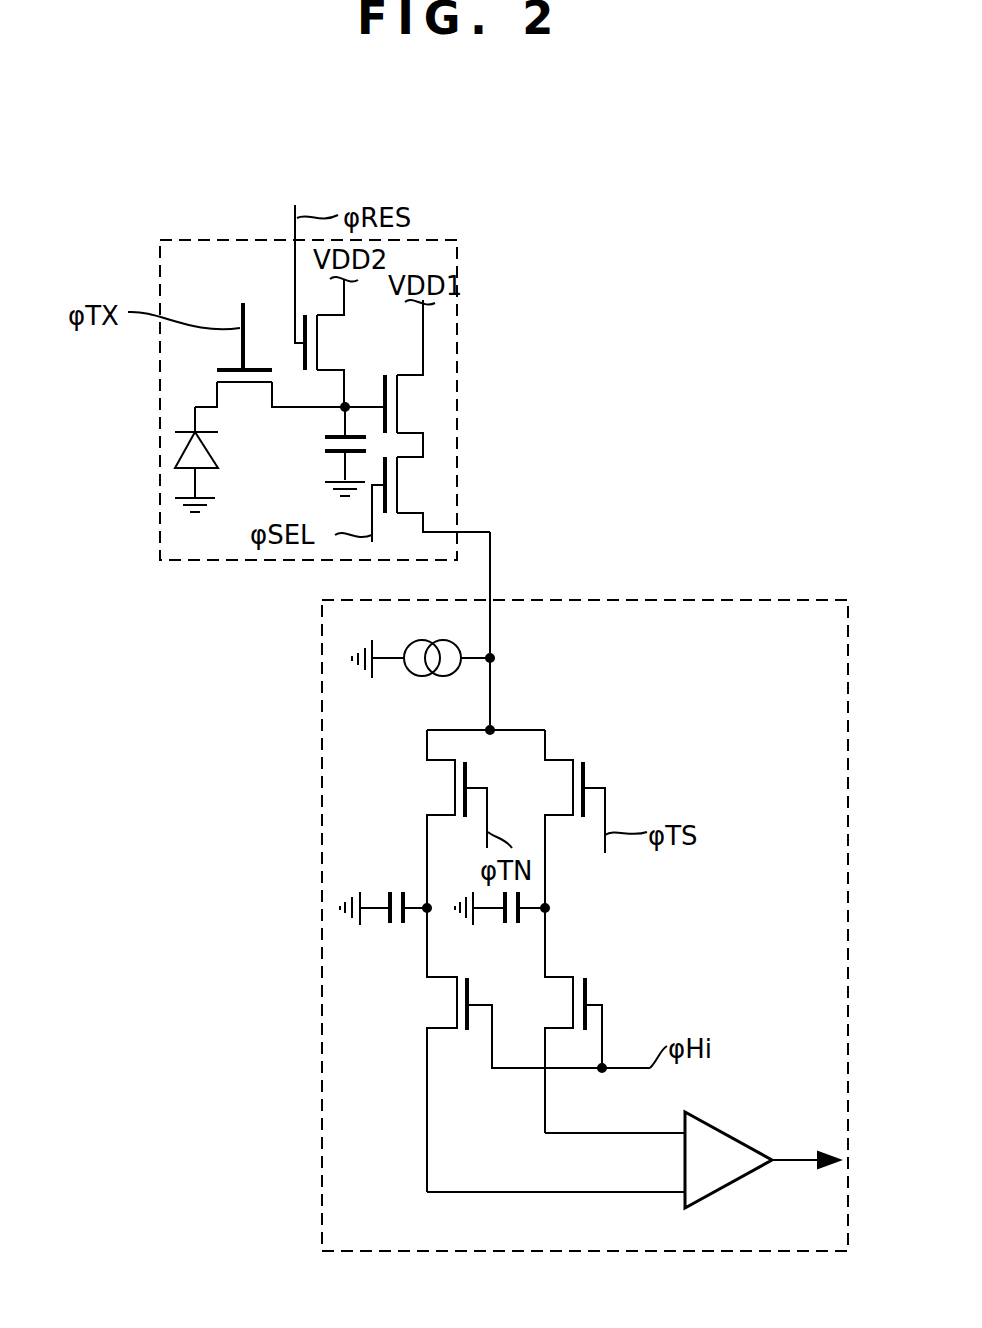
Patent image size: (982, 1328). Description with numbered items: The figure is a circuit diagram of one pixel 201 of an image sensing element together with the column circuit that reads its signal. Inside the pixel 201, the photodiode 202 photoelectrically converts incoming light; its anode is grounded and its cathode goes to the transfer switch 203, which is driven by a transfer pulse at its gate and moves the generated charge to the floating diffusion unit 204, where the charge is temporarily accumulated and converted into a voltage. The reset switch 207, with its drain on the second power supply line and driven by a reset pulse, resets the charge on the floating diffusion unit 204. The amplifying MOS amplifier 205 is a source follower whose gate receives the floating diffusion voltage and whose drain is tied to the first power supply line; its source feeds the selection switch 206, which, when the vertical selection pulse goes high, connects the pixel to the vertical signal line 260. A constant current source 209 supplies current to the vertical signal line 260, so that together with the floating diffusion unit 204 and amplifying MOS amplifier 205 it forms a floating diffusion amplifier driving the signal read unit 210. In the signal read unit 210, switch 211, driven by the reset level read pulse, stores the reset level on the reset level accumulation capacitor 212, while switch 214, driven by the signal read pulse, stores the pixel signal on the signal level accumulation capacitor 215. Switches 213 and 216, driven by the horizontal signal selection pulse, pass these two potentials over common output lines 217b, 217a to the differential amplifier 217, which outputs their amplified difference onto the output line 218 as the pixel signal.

The pixel 201 is at (457, 260).
The photodiode 202 is at (180, 453).
The transfer switch 203 is at (217, 382).
The floating diffusion unit 204 is at (317, 445).
The amplifying MOS amplifier 205 is at (415, 425).
The selection switch 206 is at (415, 507).
The reset switch 207 is at (332, 367).
The constant current source 209 is at (420, 640).
The signal read unit 210 is at (676, 600).
The switch 211 is at (440, 762).
The reset level accumulation capacitor 212 is at (397, 926).
The switch 213 is at (445, 1032).
The switch 214 is at (573, 762).
The signal level accumulation capacitor 215 is at (510, 926).
The switch 216 is at (573, 978).
The differential amplifier 217 is at (730, 1132).
The common output line 217a is at (572, 1133).
The common output line 217b is at (565, 1192).
The output line 218 is at (795, 1163).
The vertical signal line 260 is at (490, 563).